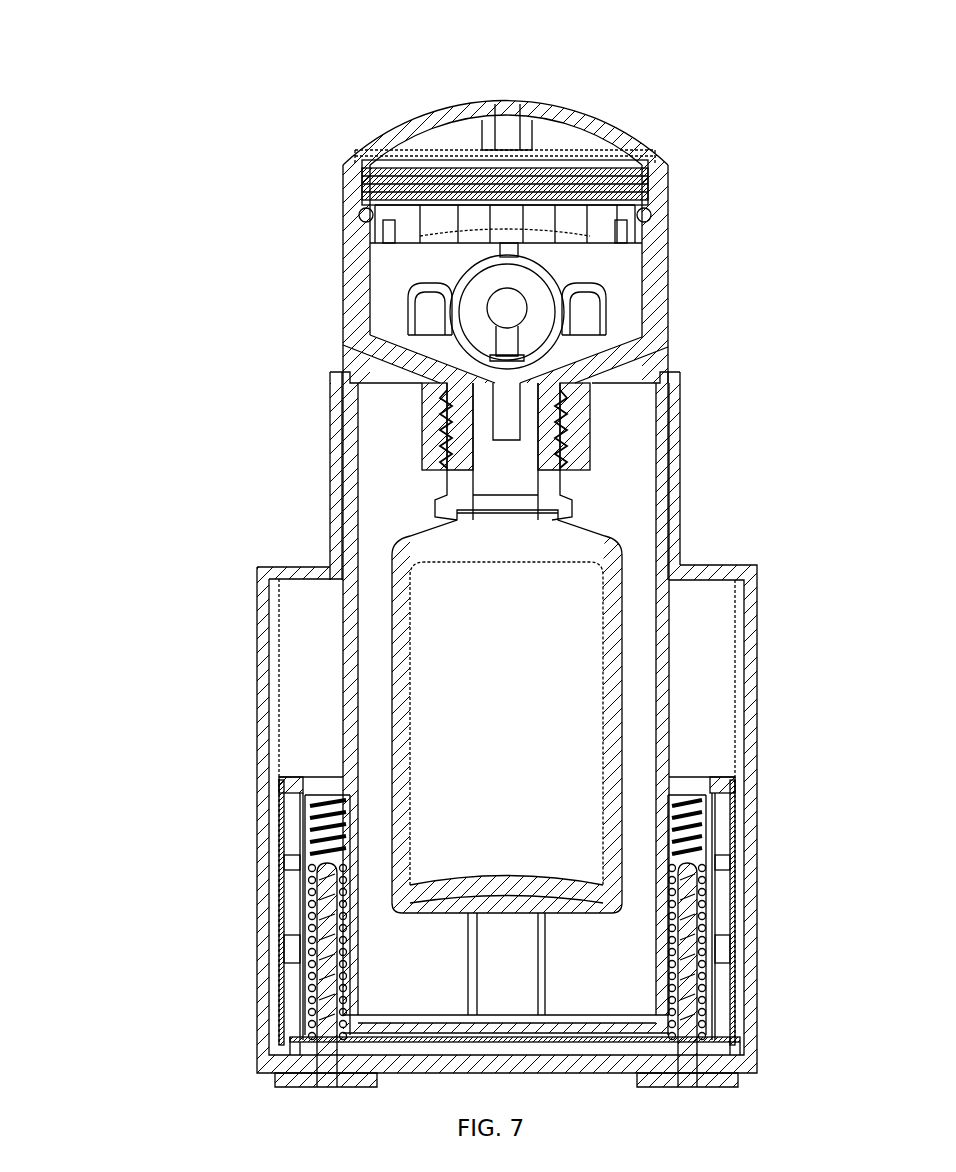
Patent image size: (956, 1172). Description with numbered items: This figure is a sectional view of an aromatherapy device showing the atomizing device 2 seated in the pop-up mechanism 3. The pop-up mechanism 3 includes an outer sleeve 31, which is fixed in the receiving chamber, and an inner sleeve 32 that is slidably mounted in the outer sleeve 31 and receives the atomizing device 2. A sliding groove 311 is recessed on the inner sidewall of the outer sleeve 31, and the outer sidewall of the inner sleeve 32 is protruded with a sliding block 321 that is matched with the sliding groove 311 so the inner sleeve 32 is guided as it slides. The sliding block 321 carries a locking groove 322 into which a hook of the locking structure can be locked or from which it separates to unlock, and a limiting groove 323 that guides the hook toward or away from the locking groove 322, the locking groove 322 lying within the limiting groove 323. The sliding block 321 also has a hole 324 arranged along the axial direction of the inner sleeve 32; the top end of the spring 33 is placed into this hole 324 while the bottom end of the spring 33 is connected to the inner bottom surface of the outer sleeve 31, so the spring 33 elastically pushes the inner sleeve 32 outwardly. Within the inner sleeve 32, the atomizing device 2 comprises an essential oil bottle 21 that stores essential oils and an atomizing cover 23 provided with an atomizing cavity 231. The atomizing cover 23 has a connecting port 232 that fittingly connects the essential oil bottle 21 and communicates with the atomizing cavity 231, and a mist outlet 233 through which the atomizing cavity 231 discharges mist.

The atomizing device 2 is at (330, 320).
The essential oil bottle 21 is at (605, 590).
The atomizing cover 23 is at (652, 297).
The atomizing cavity 231 is at (620, 293).
The connecting port 232 is at (572, 412).
The mist outlet 233 is at (508, 132).
The pop-up mechanism 3 is at (242, 791).
The outer sleeve 31 is at (260, 755).
The sliding groove 311 is at (297, 747).
The inner sleeve 32 is at (352, 640).
The sliding block 321 is at (322, 785).
The locking groove 322 is at (283, 820).
The limiting groove 323 is at (290, 935).
The hole 324 is at (300, 987).
The spring 33 is at (317, 1007).